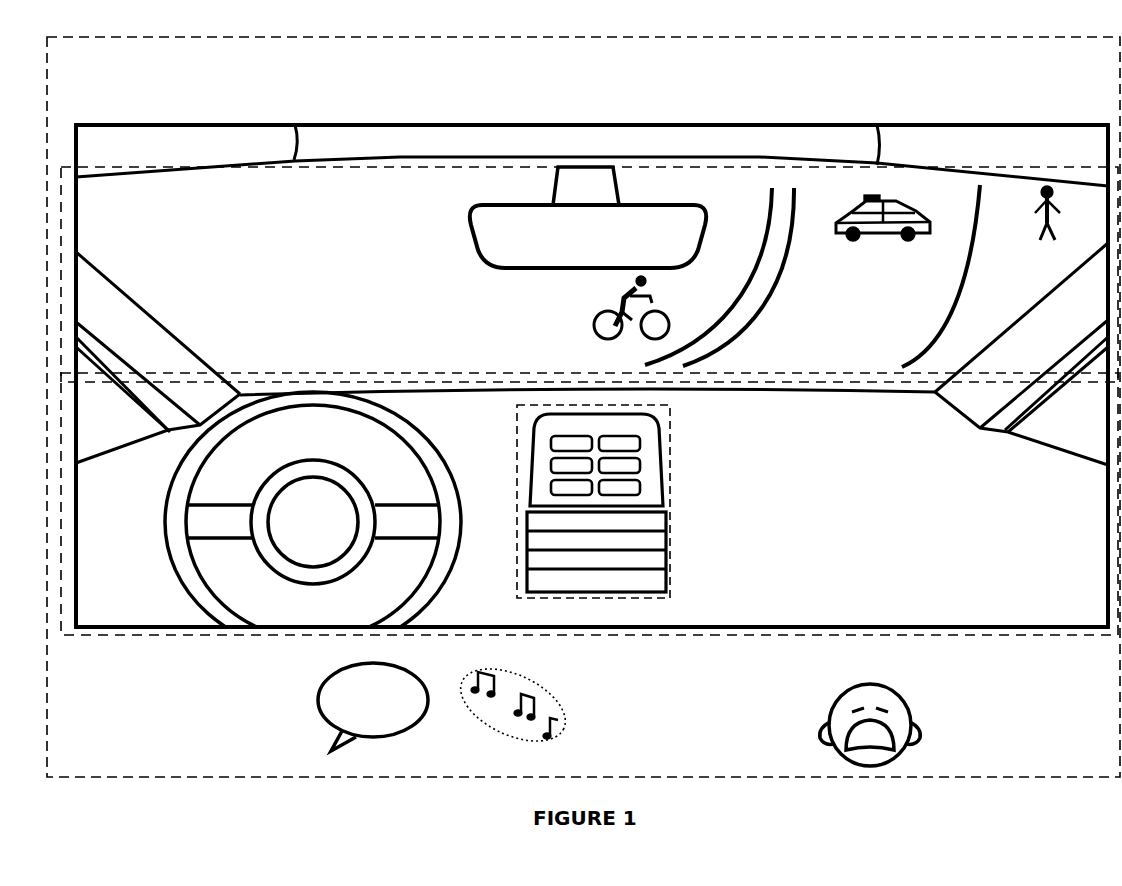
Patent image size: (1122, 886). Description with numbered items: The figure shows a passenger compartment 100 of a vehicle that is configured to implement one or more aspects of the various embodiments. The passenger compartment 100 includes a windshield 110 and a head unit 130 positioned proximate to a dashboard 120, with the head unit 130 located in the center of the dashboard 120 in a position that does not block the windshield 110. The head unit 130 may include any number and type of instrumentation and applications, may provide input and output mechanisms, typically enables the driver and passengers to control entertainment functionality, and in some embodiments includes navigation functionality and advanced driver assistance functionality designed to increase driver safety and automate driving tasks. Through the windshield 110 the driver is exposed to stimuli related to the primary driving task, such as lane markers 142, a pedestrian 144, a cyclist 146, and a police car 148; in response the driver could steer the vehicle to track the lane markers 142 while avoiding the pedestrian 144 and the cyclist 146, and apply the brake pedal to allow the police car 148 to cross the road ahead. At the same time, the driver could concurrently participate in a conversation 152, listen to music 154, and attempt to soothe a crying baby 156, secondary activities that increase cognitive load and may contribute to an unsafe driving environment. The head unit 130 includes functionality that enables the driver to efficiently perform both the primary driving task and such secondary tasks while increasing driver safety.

The passenger compartment 100 is at (583, 407).
The windshield 110 is at (505, 167).
The dashboard 120 is at (149, 636).
The head unit 130 is at (670, 592).
The lane markers 142 is at (764, 288).
The pedestrian 144 is at (1041, 233).
The cyclist 146 is at (592, 288).
The police car 148 is at (895, 240).
The conversation 152 is at (318, 702).
The music 154 is at (562, 705).
The crying baby 156 is at (892, 685).